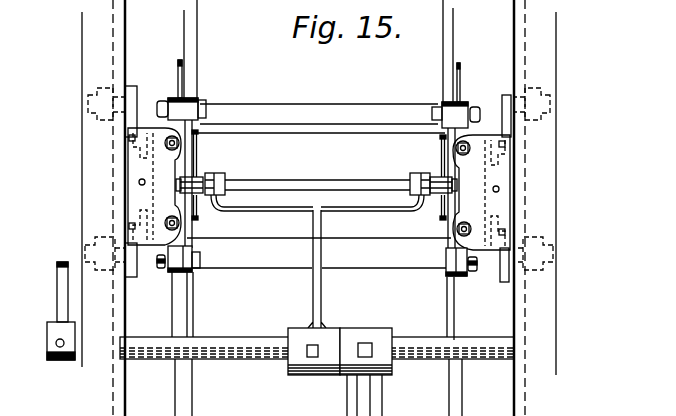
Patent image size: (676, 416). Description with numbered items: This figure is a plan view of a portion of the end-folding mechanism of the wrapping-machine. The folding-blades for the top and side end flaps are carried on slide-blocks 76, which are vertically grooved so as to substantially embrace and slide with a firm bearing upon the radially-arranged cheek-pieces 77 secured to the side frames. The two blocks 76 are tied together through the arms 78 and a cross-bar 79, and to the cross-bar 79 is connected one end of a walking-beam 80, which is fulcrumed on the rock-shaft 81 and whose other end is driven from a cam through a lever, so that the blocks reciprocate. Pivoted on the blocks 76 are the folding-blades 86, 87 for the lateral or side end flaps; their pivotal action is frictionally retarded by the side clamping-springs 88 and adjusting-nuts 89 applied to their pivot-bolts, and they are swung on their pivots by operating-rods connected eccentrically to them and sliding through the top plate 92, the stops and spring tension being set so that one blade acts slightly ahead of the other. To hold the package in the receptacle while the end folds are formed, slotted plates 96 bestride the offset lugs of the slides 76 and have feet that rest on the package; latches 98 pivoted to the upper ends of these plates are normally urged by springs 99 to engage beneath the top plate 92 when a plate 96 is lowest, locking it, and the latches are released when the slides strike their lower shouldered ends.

The slide-block 76 is at (143, 209).
The cheek-piece 77 is at (147, 157).
The arm 78 is at (226, 180).
The cross-bar 79 is at (315, 182).
The walking-beam 80 is at (322, 290).
The rock-shaft 81 is at (255, 342).
The folding-blade 86 is at (172, 307).
The folding-blade 87 is at (179, 63).
The side clamping-spring 88 is at (168, 273).
The adjusting-nut 89 is at (164, 273).
The top plate 92 is at (176, 130).
The slotted plate 96 is at (197, 160).
The latch 98 is at (198, 198).
The spring 99 is at (196, 179).